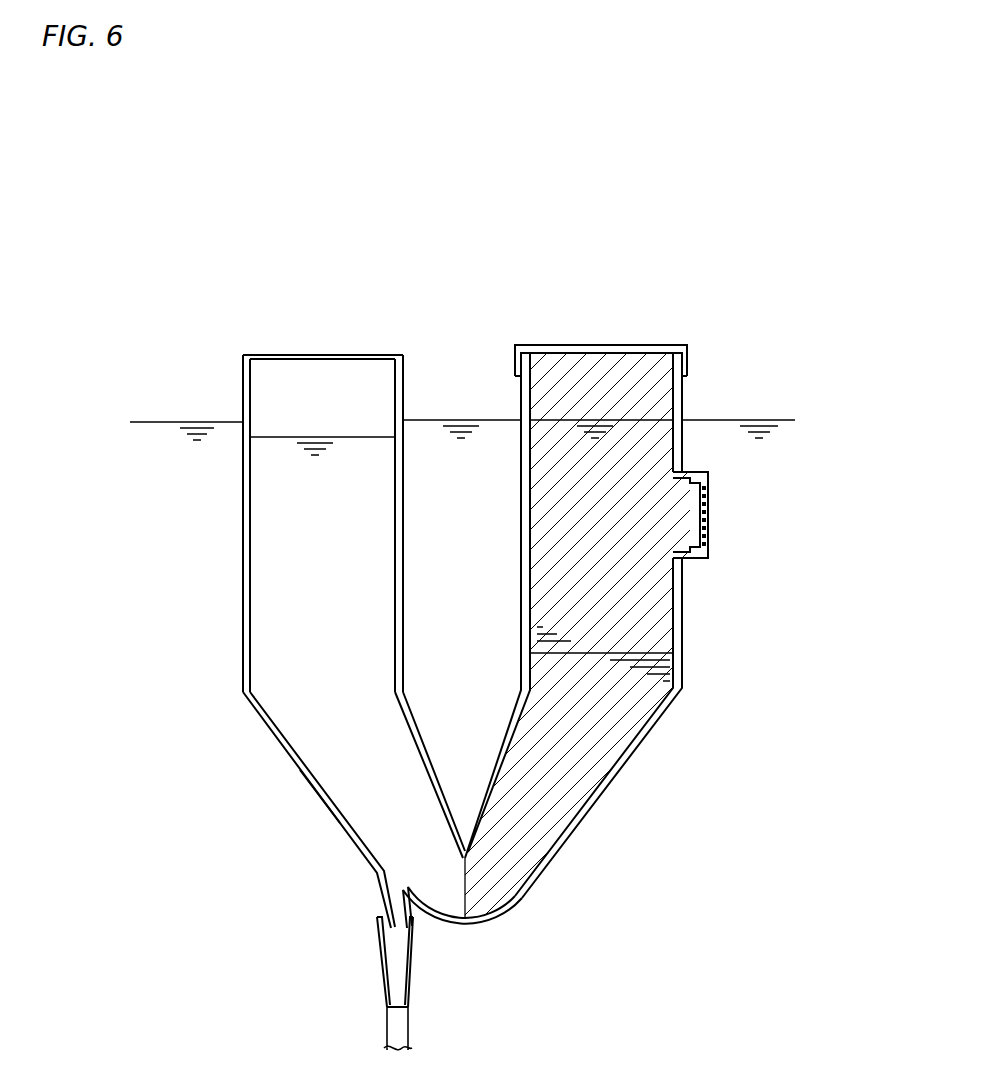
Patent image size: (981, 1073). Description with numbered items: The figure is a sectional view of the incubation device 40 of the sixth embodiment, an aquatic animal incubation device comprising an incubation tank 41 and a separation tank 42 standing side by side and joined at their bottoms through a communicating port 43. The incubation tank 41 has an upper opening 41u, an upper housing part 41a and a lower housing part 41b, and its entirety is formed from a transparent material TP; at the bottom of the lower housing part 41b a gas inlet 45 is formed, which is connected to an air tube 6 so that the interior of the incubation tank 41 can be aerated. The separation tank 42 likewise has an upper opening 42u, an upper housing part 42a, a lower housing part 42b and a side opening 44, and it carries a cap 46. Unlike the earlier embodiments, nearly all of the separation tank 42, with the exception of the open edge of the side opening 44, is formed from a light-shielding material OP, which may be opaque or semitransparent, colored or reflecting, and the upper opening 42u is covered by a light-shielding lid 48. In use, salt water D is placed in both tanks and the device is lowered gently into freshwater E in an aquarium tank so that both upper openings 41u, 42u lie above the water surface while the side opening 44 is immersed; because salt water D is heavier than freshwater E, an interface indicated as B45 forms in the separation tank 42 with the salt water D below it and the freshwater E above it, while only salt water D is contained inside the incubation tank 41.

The incubation device 40 is at (480, 247).
The incubation tank 41 is at (282, 602).
The upper housing part 41a is at (243, 566).
The lower housing part 41b is at (305, 778).
The upper opening 41u is at (396, 364).
The separation tank 42 is at (545, 637).
The upper housing part 42a is at (520, 538).
The lower housing part 42b is at (600, 800).
The upper opening 42u is at (668, 346).
The communicating port 43 is at (530, 922).
The side opening 44 is at (708, 540).
The gas inlet 45 is at (376, 911).
The boundary level B45 is at (675, 640).
The cap 46 is at (714, 491).
The light-shielding lid 48 is at (601, 322).
The air tube 6 is at (387, 1010).
The transparent material TP is at (708, 497).
The light-shielding material OP is at (574, 838).
The salt water D is at (330, 612).
The freshwater E is at (578, 497).